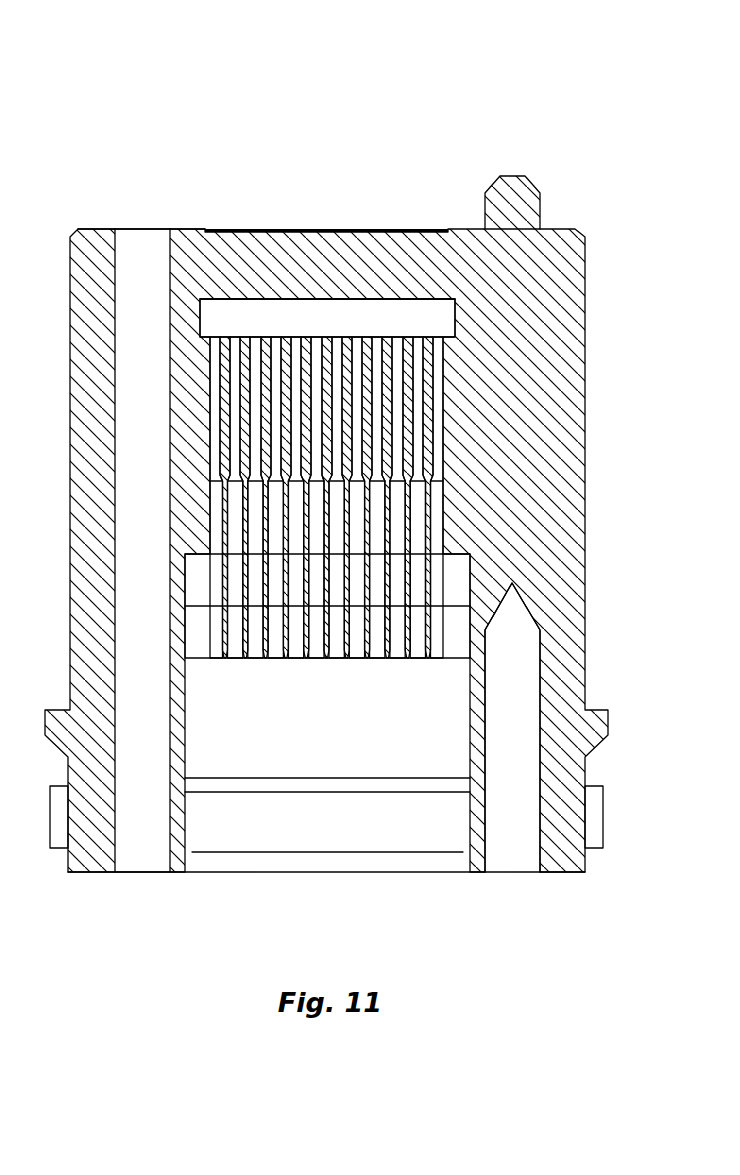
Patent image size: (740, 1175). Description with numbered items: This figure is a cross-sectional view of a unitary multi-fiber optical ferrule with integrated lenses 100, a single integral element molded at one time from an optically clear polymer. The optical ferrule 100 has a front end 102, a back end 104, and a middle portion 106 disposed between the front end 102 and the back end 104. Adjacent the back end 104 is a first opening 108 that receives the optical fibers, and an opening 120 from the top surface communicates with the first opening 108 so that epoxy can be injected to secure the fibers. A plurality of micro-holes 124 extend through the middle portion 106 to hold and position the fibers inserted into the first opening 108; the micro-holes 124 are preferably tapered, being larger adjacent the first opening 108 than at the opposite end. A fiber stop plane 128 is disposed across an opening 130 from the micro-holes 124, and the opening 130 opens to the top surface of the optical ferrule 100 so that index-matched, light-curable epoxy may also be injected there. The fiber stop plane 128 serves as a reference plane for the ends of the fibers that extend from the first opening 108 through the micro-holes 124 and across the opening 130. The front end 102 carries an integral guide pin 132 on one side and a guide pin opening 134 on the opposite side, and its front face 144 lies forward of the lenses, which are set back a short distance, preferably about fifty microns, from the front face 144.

The unitary multi-fiber optical ferrule with integrated lenses 100 is at (626, 104).
The front end 102 is at (88, 230).
The back end 104 is at (577, 876).
The middle portion 106 is at (50, 345).
The first opening 108 is at (285, 858).
The opening 120 is at (458, 568).
The micro-holes 124 is at (298, 650).
The fiber stop plane 128 is at (363, 304).
The opening 130 is at (440, 322).
The integral guide pin 132 is at (510, 176).
The guide pin opening 134 is at (137, 282).
The front face 144 is at (481, 229).